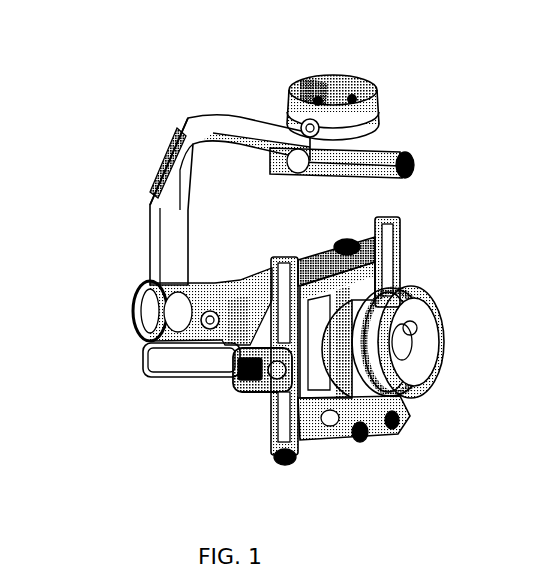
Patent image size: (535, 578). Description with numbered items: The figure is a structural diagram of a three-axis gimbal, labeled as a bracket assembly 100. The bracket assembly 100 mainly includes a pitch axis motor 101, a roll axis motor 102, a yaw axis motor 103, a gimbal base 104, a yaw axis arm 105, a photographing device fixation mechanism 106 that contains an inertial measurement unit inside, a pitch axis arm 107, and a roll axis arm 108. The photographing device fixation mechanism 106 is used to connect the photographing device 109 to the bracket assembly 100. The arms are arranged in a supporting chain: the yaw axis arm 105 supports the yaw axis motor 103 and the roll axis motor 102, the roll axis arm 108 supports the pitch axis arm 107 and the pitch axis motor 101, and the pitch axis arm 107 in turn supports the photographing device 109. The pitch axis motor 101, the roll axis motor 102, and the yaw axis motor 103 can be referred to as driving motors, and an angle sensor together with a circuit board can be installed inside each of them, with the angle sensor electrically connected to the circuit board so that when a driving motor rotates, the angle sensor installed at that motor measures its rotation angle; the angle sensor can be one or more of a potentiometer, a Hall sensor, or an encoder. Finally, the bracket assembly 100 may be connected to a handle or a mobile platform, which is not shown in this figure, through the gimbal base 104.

The bracket assembly 100 is at (290, 243).
The pitch axis motor 101 is at (419, 277).
The roll axis motor 102 is at (132, 293).
The yaw axis motor 103 is at (390, 116).
The gimbal base 104 is at (332, 80).
The yaw axis arm 105 is at (150, 159).
The photographing device fixation mechanism 106 is at (360, 415).
The pitch axis arm 107 is at (268, 421).
The roll axis arm 108 is at (165, 377).
The photographing device 109 is at (420, 362).